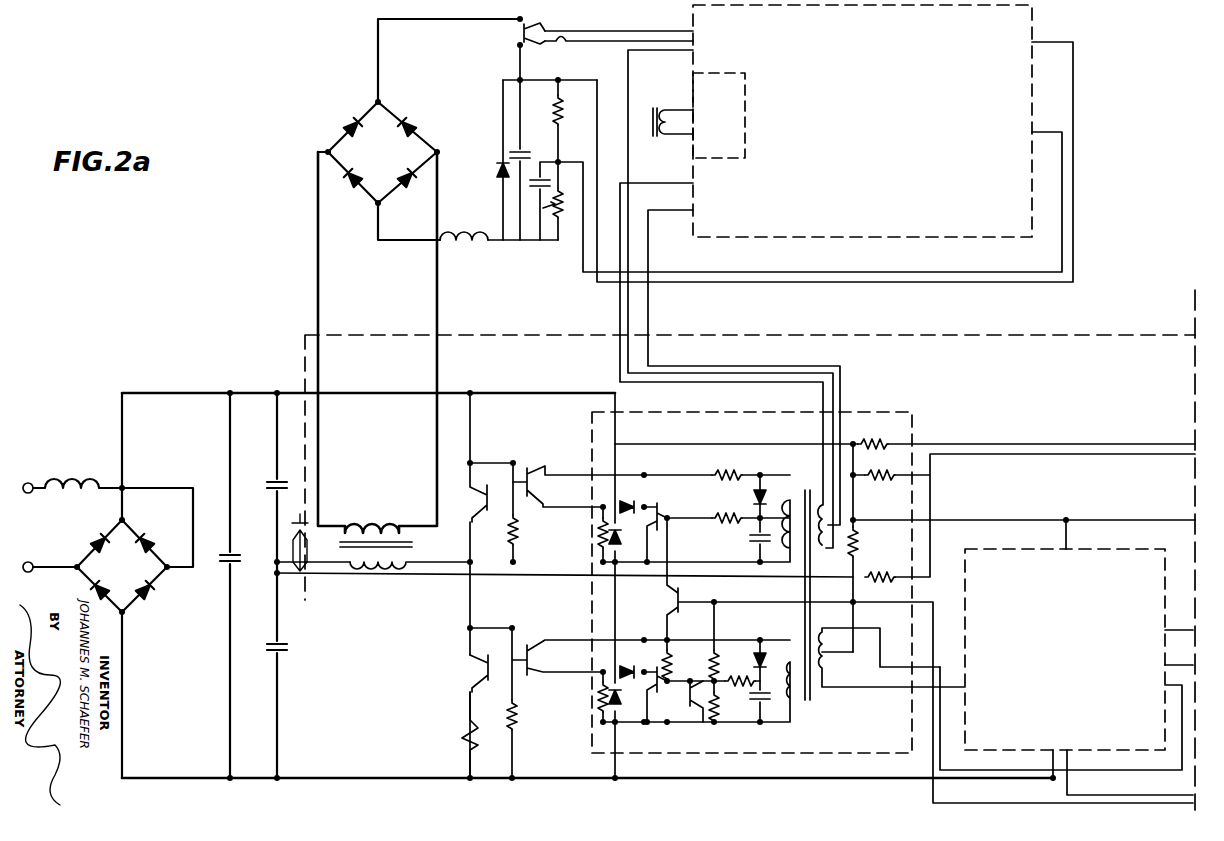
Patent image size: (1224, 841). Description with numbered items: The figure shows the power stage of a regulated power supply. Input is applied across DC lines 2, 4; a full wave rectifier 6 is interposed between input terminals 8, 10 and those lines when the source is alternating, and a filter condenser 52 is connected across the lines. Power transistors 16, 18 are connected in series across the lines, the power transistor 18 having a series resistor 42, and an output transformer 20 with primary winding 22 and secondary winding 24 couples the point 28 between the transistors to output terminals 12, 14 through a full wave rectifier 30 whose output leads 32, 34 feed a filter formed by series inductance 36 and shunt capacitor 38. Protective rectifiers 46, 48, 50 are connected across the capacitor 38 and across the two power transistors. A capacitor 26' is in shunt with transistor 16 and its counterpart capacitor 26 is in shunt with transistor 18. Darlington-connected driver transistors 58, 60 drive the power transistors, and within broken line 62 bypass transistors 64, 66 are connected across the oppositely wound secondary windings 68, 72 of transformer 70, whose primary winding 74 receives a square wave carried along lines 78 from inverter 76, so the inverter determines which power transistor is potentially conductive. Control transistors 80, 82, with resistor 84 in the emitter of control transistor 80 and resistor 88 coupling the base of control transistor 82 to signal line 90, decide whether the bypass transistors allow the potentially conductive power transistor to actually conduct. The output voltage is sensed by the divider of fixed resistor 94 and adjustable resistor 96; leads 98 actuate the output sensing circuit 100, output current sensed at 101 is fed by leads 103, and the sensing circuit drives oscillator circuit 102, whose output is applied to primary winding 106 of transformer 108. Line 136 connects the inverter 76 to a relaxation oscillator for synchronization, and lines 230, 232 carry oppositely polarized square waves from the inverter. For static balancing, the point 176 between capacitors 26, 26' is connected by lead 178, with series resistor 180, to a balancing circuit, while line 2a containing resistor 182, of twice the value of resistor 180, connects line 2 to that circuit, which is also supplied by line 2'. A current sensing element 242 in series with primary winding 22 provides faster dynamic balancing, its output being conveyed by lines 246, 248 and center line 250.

The DC input line 2 is at (368, 381).
The line 2a is at (1043, 445).
The line 2' is at (1022, 522).
The DC input line 4 is at (188, 779).
The full wave rectifier 6 is at (145, 590).
The input terminal 8 is at (30, 482).
The input terminal 10 is at (30, 561).
The output terminal 12 is at (528, 80).
The output terminal 14 is at (520, 242).
The power transistor 16 is at (482, 508).
The power transistor 18 is at (474, 682).
The output transformer 20 is at (427, 547).
The primary winding 22 is at (388, 572).
The secondary winding 24 is at (383, 526).
The capacitor 26 is at (301, 585).
The capacitor 26' is at (263, 471).
The point 28 is at (480, 558).
The full wave rectifier 30 is at (386, 117).
The output lead 32 is at (462, 19).
The output lead 34 is at (414, 242).
The series inductance 36 is at (468, 238).
The shunt capacitor 38 is at (530, 154).
The resistor 42 is at (460, 738).
The protective rectifier 46 is at (496, 170).
The protective rectifier 48 is at (598, 525).
The protective rectifier 50 is at (598, 710).
The filter condenser 52 is at (218, 569).
The driver transistors 58 is at (534, 472).
The driver transistors 60 is at (518, 644).
The broken line 62 is at (872, 412).
The bypass transistor 64 is at (648, 530).
The bypass transistor 66 is at (648, 692).
The secondary winding 68 is at (792, 502).
The transformer 70 is at (808, 702).
The secondary winding 72 is at (791, 676).
The primary winding 74 is at (822, 631).
The inverter 76 is at (1074, 665).
The lines 78 is at (960, 678).
The control transistor 80 is at (665, 610).
The control transistor 82 is at (692, 709).
The resistor 84 is at (668, 665).
The resistor 88 is at (714, 665).
The signal line 90 is at (933, 612).
The fixed resistor 94 is at (570, 113).
The adjustable resistor 96 is at (564, 201).
The leads 98 is at (583, 178).
The output sensing circuit 100 is at (954, 162).
The current sensing point 101 is at (514, 50).
The oscillator circuit 102 is at (746, 154).
The leads 103 is at (610, 31).
The primary winding 106 is at (680, 112).
The transformer 108 is at (654, 152).
The line 136 is at (1120, 795).
The point 176 is at (274, 562).
The lead 178 is at (418, 575).
The resistor 180 is at (873, 574).
The resistor 182 is at (883, 430).
The line 230 is at (1172, 611).
The line 232 is at (1180, 671).
The current sensing element 242 is at (294, 562).
The line 246 is at (480, 337).
The line 248 is at (730, 299).
The center line 250 is at (744, 367).